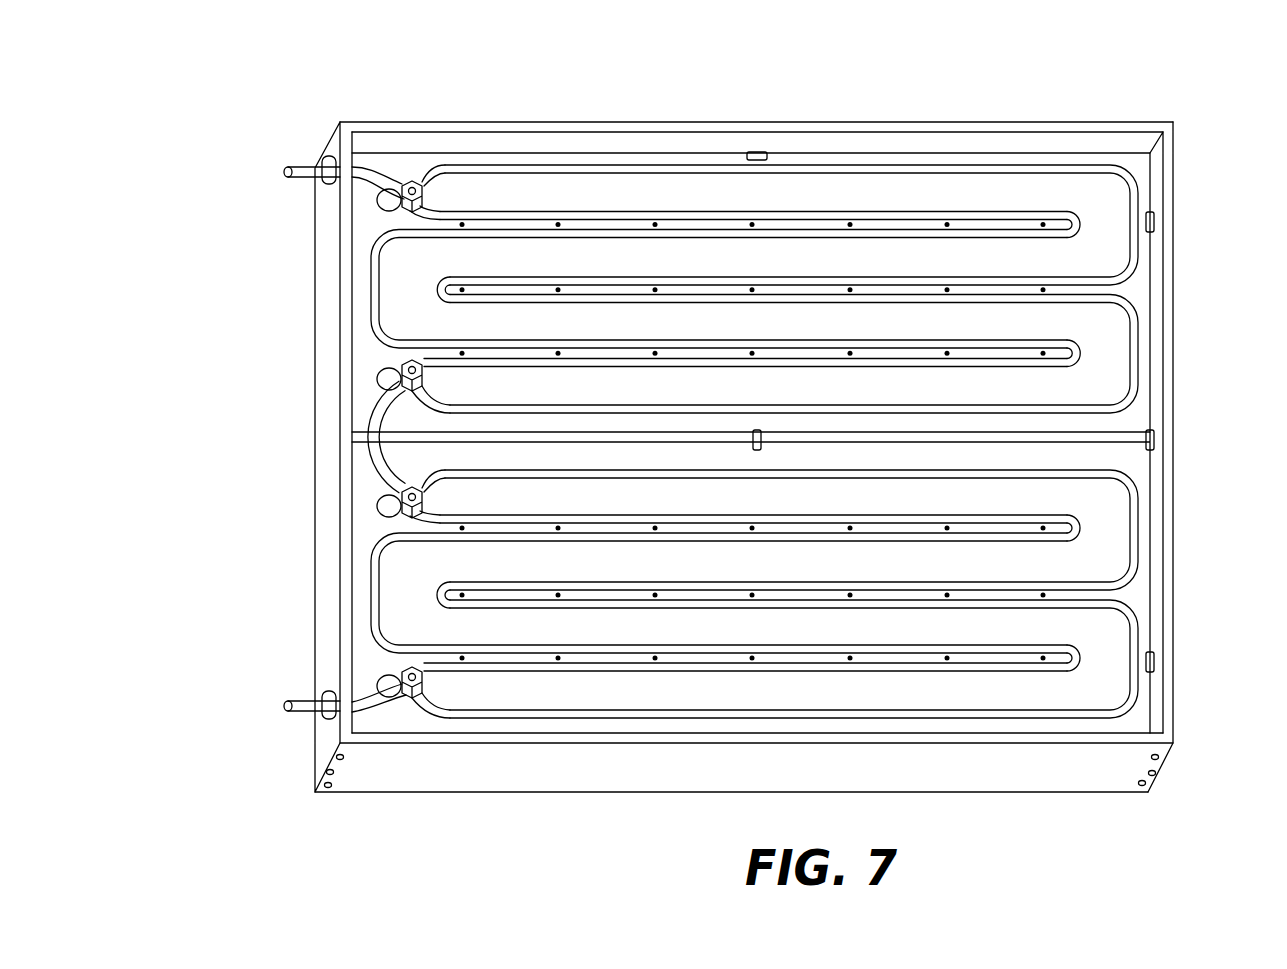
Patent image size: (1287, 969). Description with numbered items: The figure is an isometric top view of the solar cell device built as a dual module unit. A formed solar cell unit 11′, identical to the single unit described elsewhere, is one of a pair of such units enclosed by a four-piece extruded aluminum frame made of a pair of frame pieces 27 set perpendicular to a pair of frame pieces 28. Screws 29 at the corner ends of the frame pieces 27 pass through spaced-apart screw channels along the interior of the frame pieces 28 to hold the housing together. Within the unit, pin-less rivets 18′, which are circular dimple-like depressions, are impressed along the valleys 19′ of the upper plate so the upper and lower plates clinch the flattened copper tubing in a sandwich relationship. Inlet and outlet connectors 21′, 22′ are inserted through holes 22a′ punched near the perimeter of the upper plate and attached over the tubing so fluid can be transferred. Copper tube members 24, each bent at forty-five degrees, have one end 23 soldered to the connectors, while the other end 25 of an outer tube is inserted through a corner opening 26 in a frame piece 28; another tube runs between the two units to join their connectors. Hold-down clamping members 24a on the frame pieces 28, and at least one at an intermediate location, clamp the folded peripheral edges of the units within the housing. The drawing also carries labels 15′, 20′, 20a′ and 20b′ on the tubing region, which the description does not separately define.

The formed solar cell unit 11′ is at (793, 148).
The upper serpentine tube 15′ is at (744, 246).
The pin-less rivet 18′ is at (463, 228).
The valley 19′ is at (905, 213).
The upper panel surface 20′ is at (731, 286).
The upper tube runs 20a′ is at (505, 165).
The upper tube runs 20b′ is at (585, 214).
The inlet and outlet connector 21′ is at (395, 249).
The inlet and outlet connector 22′ is at (425, 190).
The hole 22a′ is at (445, 208).
The end of copper tube member 23 is at (380, 203).
The copper tube member 24 is at (322, 166).
The hold-down clamping member 24a is at (757, 152).
The other end of copper tube member 25 is at (283, 172).
The corner opening 26 is at (330, 157).
The frame piece 27 is at (723, 122).
The frame piece 28 is at (325, 263).
The screw 29 is at (330, 775).